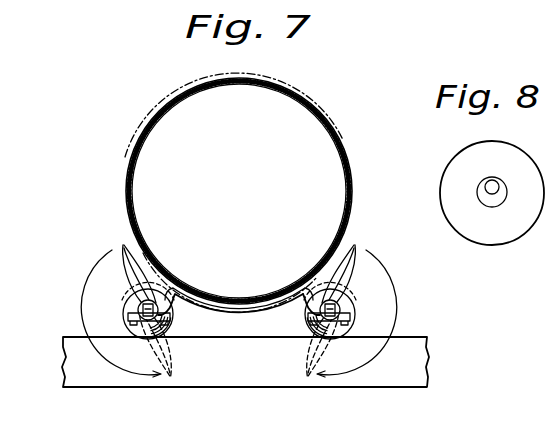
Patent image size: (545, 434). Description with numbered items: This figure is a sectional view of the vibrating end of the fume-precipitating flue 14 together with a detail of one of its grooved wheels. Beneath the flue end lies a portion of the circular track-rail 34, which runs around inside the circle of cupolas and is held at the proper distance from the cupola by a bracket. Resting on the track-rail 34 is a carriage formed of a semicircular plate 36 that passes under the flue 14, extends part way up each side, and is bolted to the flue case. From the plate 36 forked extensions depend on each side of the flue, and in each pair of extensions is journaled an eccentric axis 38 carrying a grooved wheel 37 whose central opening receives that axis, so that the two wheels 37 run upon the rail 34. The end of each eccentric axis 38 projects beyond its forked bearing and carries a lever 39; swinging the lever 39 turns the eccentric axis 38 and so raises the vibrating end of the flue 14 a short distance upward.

In FIG. 7, the precipitating-flue 14 is at (238, 192).
In FIG. 7, the circular track-rail 34 is at (245, 362).
In FIG. 7, the semicircular plate 36 is at (257, 313).
In FIG. 7, the grooved wheel 37 is at (124, 313).
In FIG. 8, the grooved wheel 37 is at (492, 193).
In FIG. 8, the eccentric axis 38 is at (487, 207).
In FIG. 7, the lever 39 is at (131, 288).